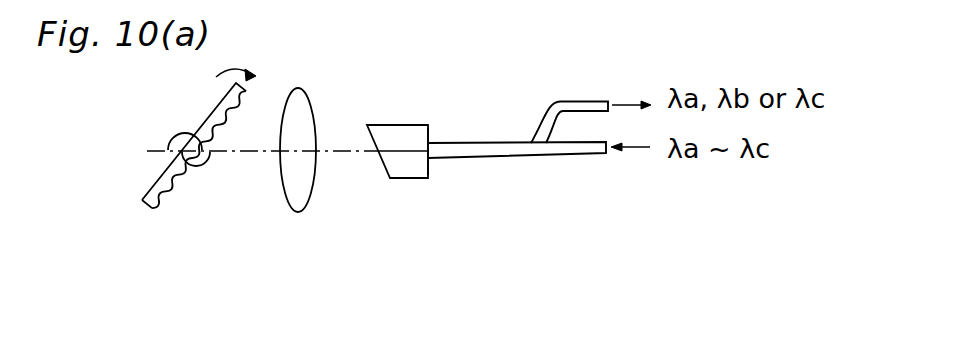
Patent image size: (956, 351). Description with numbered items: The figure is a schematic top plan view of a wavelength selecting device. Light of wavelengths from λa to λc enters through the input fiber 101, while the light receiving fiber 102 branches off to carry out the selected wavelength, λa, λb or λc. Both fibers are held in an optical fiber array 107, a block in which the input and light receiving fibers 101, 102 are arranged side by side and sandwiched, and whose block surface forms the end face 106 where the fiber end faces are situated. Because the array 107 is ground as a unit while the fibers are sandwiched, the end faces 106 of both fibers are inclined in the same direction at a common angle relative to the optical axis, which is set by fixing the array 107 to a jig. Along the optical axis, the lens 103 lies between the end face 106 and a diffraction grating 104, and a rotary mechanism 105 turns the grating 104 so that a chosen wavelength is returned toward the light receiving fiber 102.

The input fiber 101 is at (570, 150).
The light receiving fiber 102 is at (581, 100).
The lens 103 is at (295, 200).
The diffraction grating 104 is at (163, 197).
The rotary mechanism 105 is at (168, 138).
The end face 106 is at (385, 171).
The optical fiber array 107 is at (422, 135).